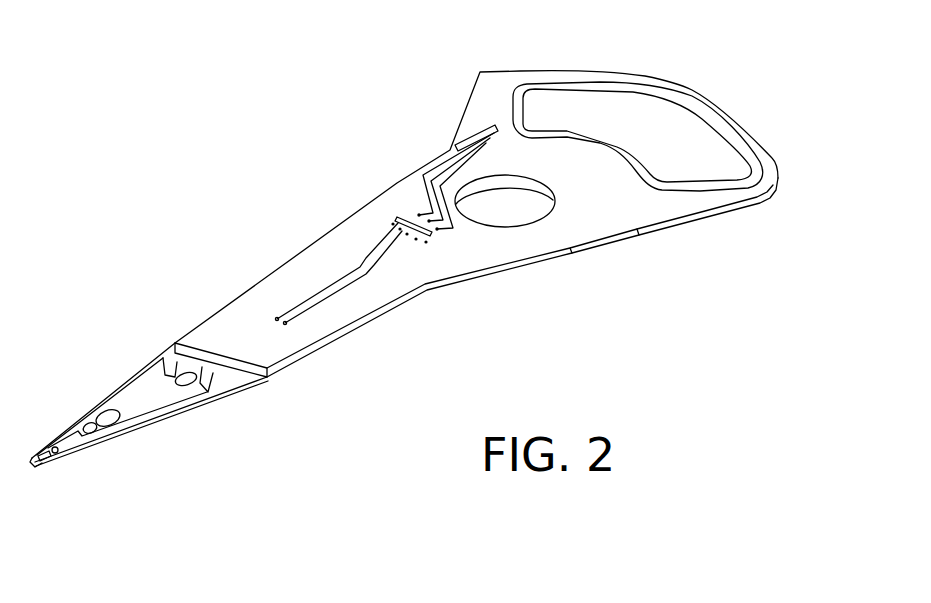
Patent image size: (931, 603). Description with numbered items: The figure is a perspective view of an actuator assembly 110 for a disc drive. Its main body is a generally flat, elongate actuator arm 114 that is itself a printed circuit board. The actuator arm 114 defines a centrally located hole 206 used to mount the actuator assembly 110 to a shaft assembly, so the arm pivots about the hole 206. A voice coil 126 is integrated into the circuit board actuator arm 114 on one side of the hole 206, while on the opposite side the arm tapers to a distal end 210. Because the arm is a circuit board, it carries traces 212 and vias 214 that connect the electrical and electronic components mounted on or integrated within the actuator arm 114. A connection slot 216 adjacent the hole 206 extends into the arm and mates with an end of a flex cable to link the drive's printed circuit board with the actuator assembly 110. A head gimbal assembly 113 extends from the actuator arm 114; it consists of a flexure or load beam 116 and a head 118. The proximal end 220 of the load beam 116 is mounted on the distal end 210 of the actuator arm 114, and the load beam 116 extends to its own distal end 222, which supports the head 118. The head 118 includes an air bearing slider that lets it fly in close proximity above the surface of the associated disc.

The actuator assembly 110 is at (232, 152).
The head gimbal assembly 113 is at (90, 352).
The actuator arm 114 is at (350, 170).
The load beam 116 is at (207, 422).
The head 118 is at (67, 481).
The voice coil 126 is at (577, 84).
The hole 206 is at (508, 213).
The distal end 210 is at (258, 343).
The traces 212 is at (350, 285).
The vias 214 is at (275, 318).
The connection slot 216 is at (455, 150).
The proximal end 220 is at (170, 364).
The distal end 222 is at (82, 445).